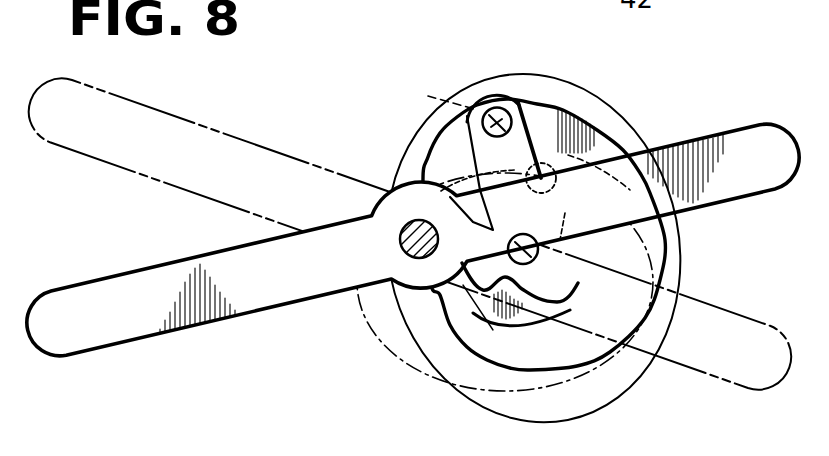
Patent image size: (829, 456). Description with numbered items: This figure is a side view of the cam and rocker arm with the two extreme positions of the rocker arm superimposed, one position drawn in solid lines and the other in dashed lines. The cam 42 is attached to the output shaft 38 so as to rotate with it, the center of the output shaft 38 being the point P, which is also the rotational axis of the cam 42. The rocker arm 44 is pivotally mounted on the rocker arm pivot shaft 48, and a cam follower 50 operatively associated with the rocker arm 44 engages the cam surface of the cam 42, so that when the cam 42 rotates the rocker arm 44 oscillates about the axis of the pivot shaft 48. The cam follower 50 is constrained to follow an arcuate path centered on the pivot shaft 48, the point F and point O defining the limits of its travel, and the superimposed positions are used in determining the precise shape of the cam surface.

The output shaft 38 is at (465, 281).
The cam 42 is at (583, 95).
The rocker arm 44 is at (147, 322).
The rocker arm pivot shaft 48 is at (408, 222).
The cam follower 50 is at (502, 110).
The point F is at (488, 108).
The point P is at (536, 260).